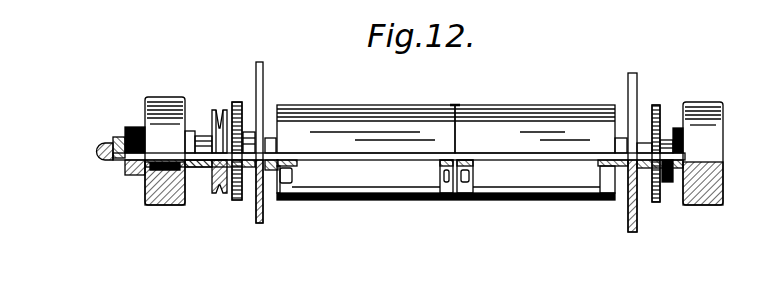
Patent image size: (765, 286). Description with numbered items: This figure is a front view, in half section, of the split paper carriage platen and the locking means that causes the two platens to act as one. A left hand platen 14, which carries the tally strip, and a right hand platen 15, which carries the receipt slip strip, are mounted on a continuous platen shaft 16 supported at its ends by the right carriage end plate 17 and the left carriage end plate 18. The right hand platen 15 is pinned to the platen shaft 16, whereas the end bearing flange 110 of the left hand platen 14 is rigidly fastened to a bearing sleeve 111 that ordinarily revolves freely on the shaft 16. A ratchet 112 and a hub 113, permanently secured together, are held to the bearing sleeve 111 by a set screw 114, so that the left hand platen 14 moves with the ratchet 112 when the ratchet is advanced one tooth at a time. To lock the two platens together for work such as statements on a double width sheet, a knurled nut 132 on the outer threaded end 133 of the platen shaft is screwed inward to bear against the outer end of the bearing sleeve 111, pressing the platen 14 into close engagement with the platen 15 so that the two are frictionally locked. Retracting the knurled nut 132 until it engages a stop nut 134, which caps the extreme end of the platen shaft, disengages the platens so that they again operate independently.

The left hand platen 14 is at (355, 125).
The right hand platen 15 is at (522, 122).
The platen shaft 16 is at (347, 160).
The right carriage end plate 17 is at (631, 214).
The left carriage end plate 18 is at (262, 221).
The end bearing flange 110 is at (292, 175).
The bearing sleeve 111 is at (268, 170).
The ratchet 112 is at (239, 198).
The hub 113 is at (227, 193).
The set screw 114 is at (200, 168).
The knurled nut 132 is at (130, 127).
The outer threaded end 133 is at (118, 159).
The stop nut 134 is at (103, 147).